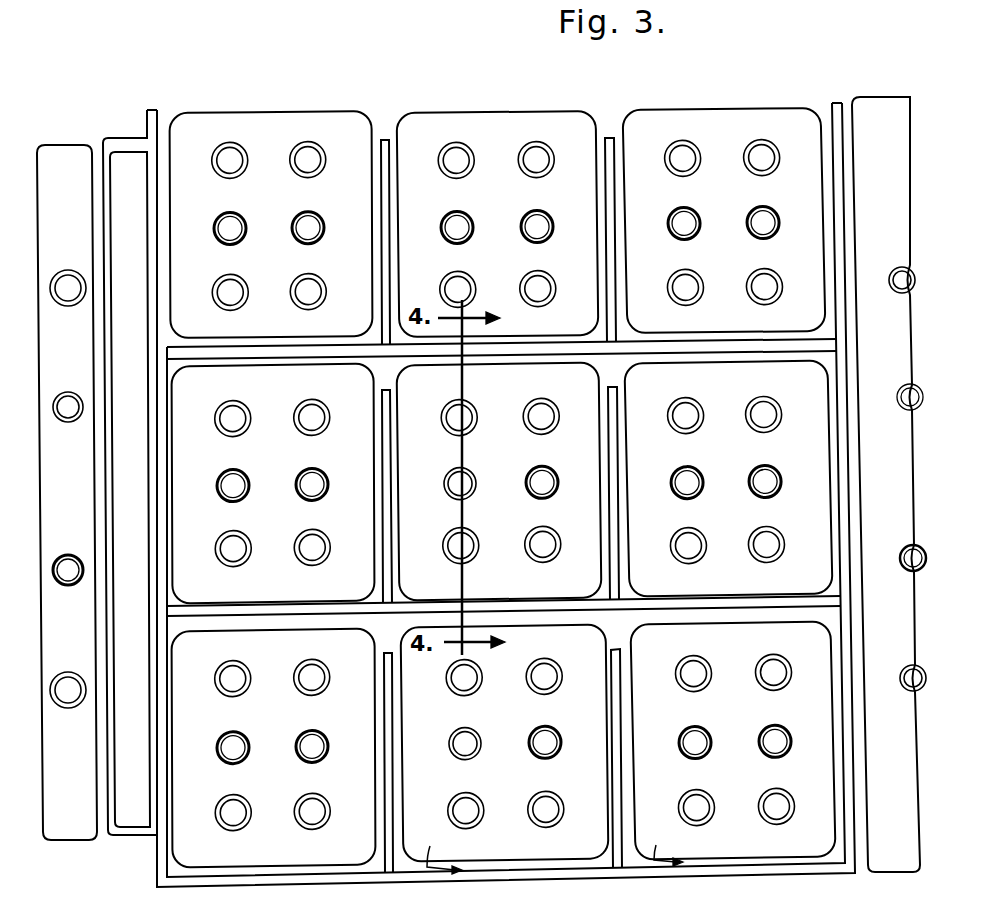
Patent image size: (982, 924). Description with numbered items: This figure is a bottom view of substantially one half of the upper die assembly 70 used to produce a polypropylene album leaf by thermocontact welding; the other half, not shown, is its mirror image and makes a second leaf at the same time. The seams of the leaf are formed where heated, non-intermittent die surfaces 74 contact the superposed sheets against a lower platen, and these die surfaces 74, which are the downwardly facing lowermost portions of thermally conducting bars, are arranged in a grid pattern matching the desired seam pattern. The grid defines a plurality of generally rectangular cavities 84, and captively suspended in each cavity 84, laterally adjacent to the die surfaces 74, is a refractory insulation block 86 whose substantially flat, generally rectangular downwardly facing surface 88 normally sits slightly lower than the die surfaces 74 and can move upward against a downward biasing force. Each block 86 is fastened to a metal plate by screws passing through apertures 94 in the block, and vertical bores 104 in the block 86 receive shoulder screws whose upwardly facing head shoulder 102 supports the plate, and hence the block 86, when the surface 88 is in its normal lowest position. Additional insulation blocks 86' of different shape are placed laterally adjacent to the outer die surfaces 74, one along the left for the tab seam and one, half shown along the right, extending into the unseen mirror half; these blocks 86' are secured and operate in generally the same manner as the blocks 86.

The upper die assembly 70 is at (244, 72).
The die surfaces 74 is at (147, 132).
The cavities 84 is at (551, 850).
The insulation block 86 is at (506, 509).
The additional insulation block 86' is at (478, 500).
The downwardly facing surface 88 is at (277, 218).
The apertures 94 is at (68, 392).
The head shoulder 102 is at (244, 298).
The vertical bores 104 is at (72, 270).